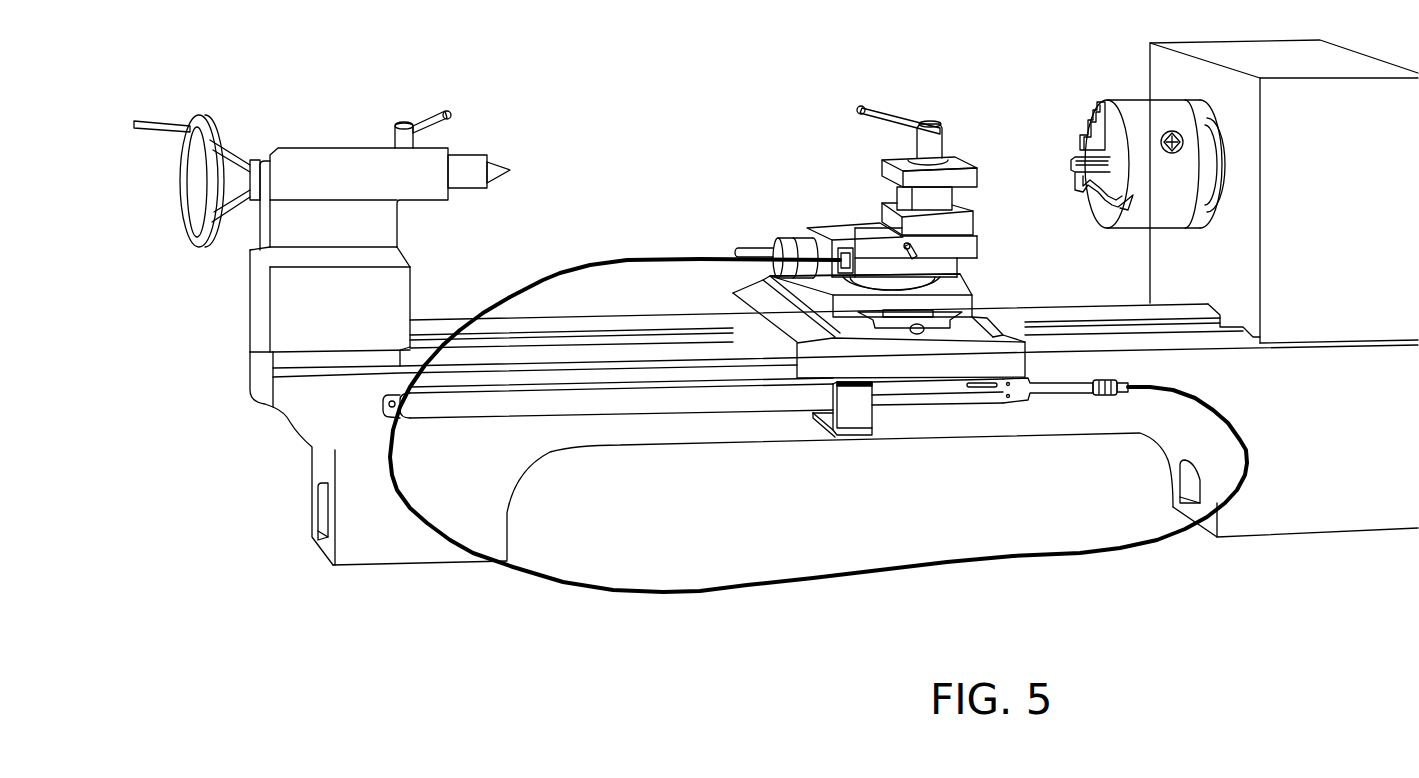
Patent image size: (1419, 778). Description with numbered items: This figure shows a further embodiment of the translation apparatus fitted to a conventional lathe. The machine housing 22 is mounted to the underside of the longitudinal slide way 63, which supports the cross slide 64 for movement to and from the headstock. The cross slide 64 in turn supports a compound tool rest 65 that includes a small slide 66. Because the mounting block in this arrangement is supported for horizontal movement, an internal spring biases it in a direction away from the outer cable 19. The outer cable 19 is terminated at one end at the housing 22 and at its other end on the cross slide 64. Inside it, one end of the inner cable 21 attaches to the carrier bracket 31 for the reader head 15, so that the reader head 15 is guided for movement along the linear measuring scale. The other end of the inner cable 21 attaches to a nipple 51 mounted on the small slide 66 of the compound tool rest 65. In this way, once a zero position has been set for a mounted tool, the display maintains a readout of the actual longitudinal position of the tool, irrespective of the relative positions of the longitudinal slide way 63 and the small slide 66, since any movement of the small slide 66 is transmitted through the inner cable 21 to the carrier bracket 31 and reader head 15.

The reader head 15 is at (845, 447).
The outer cable 19 is at (607, 252).
The inner cable 21 is at (884, 272).
The machine housing 22 is at (806, 395).
The carrier bracket 31 is at (864, 418).
The nipple 51 is at (935, 253).
The longitudinal slide way 63 is at (1005, 366).
The cross slide 64 is at (955, 286).
The compound tool rest 65 is at (990, 168).
The small slide 66 is at (855, 230).